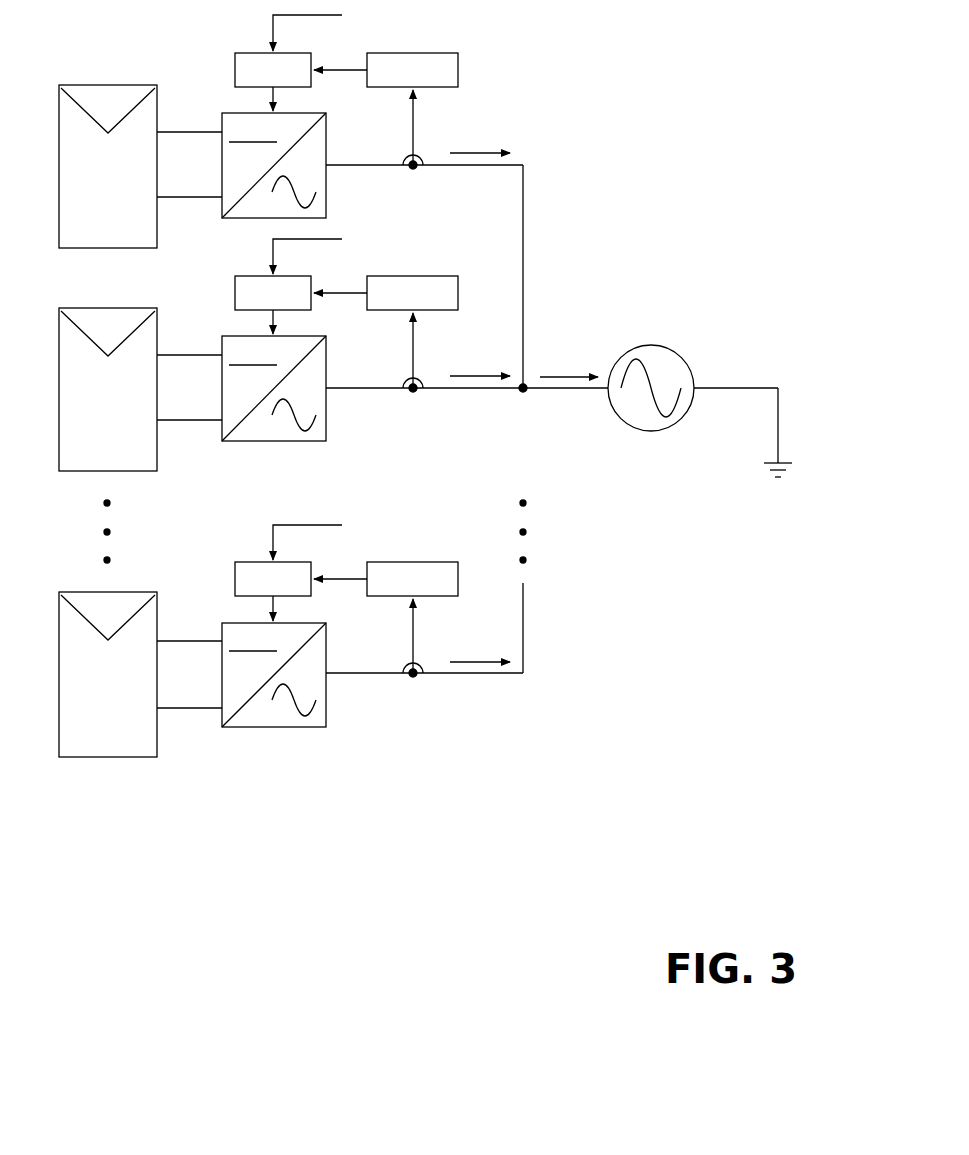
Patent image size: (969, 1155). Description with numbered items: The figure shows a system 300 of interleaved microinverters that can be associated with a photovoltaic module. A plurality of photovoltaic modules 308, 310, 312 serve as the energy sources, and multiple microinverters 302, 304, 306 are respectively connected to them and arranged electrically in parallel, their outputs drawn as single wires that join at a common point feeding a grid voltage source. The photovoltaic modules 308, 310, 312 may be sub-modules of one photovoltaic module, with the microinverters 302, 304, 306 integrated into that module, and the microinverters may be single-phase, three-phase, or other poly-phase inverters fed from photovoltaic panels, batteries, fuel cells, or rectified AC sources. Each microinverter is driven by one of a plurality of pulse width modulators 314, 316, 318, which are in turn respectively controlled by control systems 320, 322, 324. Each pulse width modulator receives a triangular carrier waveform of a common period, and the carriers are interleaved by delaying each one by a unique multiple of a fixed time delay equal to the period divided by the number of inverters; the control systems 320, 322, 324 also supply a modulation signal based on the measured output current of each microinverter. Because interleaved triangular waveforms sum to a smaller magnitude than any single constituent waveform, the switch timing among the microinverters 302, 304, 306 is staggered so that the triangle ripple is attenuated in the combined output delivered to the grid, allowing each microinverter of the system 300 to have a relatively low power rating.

The system 300 is at (616, 142).
The microinverter 302 is at (232, 113).
The microinverter 304 is at (235, 337).
The microinverter 306 is at (232, 623).
The photovoltaic module 308 is at (132, 83).
The photovoltaic module 310 is at (98, 306).
The photovoltaic module 312 is at (98, 592).
The pulse width modulator 314 is at (247, 53).
The pulse width modulator 316 is at (247, 276).
The pulse width modulator 318 is at (247, 562).
The control system 320 is at (455, 60).
The control system 322 is at (455, 283).
The control system 324 is at (453, 575).